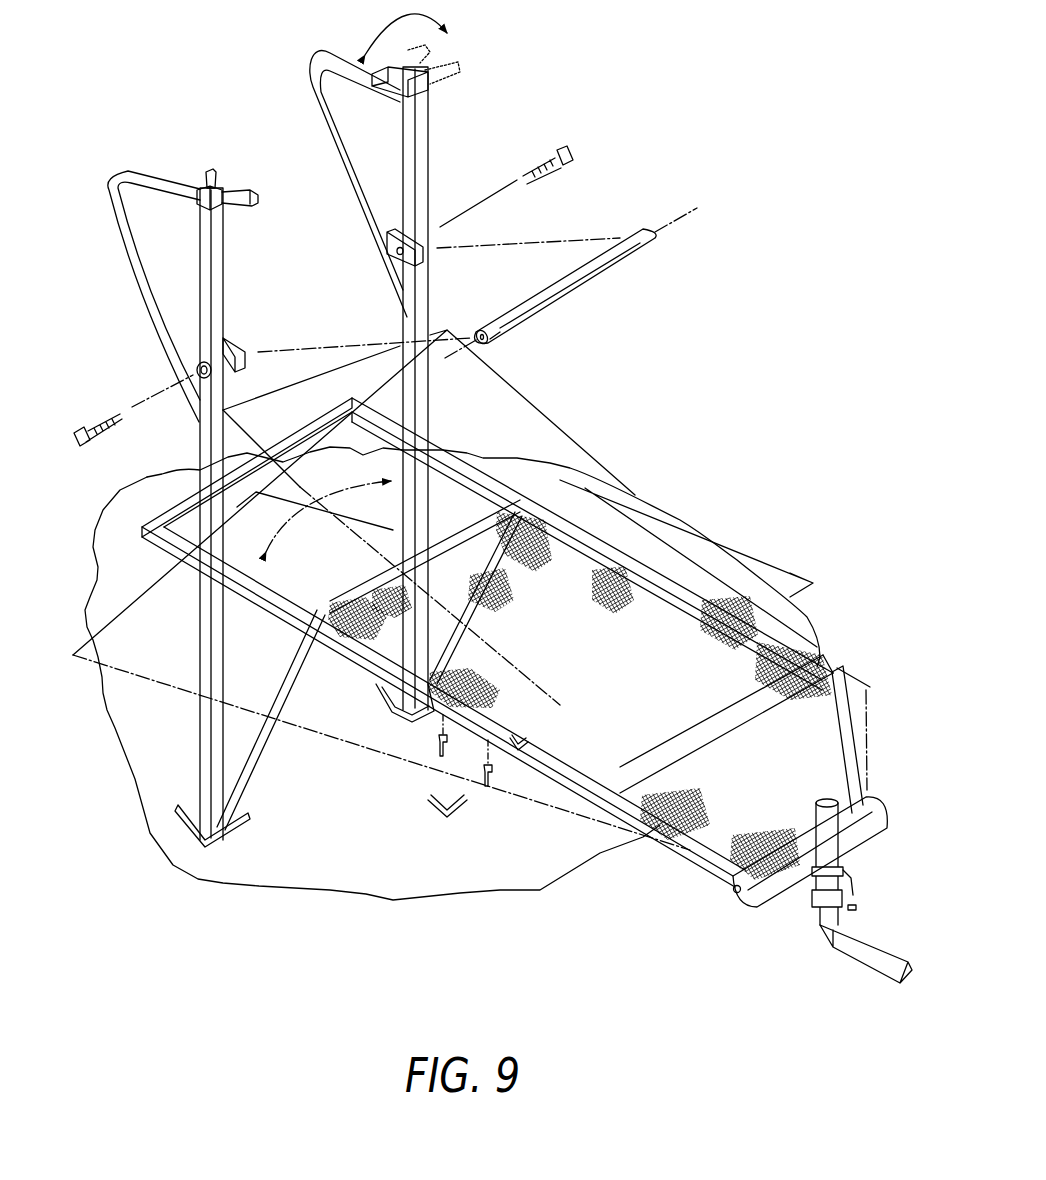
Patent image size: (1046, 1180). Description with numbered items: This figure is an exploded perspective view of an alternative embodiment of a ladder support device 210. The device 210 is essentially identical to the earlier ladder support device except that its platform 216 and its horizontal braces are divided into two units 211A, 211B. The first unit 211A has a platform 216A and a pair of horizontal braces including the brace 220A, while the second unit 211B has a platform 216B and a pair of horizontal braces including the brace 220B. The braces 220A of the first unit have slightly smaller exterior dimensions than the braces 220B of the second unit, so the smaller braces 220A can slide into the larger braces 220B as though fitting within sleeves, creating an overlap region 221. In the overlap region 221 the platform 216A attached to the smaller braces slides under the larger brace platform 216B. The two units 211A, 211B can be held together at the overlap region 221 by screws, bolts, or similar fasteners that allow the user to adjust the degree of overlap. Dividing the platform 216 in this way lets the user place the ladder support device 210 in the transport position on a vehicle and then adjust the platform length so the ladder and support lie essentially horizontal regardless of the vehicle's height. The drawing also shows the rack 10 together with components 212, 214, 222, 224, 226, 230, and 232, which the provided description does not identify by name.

The rack platform with mesh 10 is at (820, 573).
The ladder support device 210 is at (692, 120).
The first unit 211A is at (527, 478).
The second unit 211B is at (828, 632).
The first upright post 212 is at (226, 248).
The second upright post 214 is at (452, 154).
The platform 216 is at (670, 550).
The first platform 216A is at (560, 560).
The second platform 216B is at (790, 640).
The first horizontal brace 220A is at (613, 530).
The second horizontal brace 220B is at (838, 668).
The overlap region 221 is at (447, 738).
The cross tube 222 is at (200, 470).
The ground surface 224 is at (200, 849).
The retaining tab 226 is at (205, 186).
The support strut 230 is at (238, 765).
The latch arm 232 is at (252, 190).